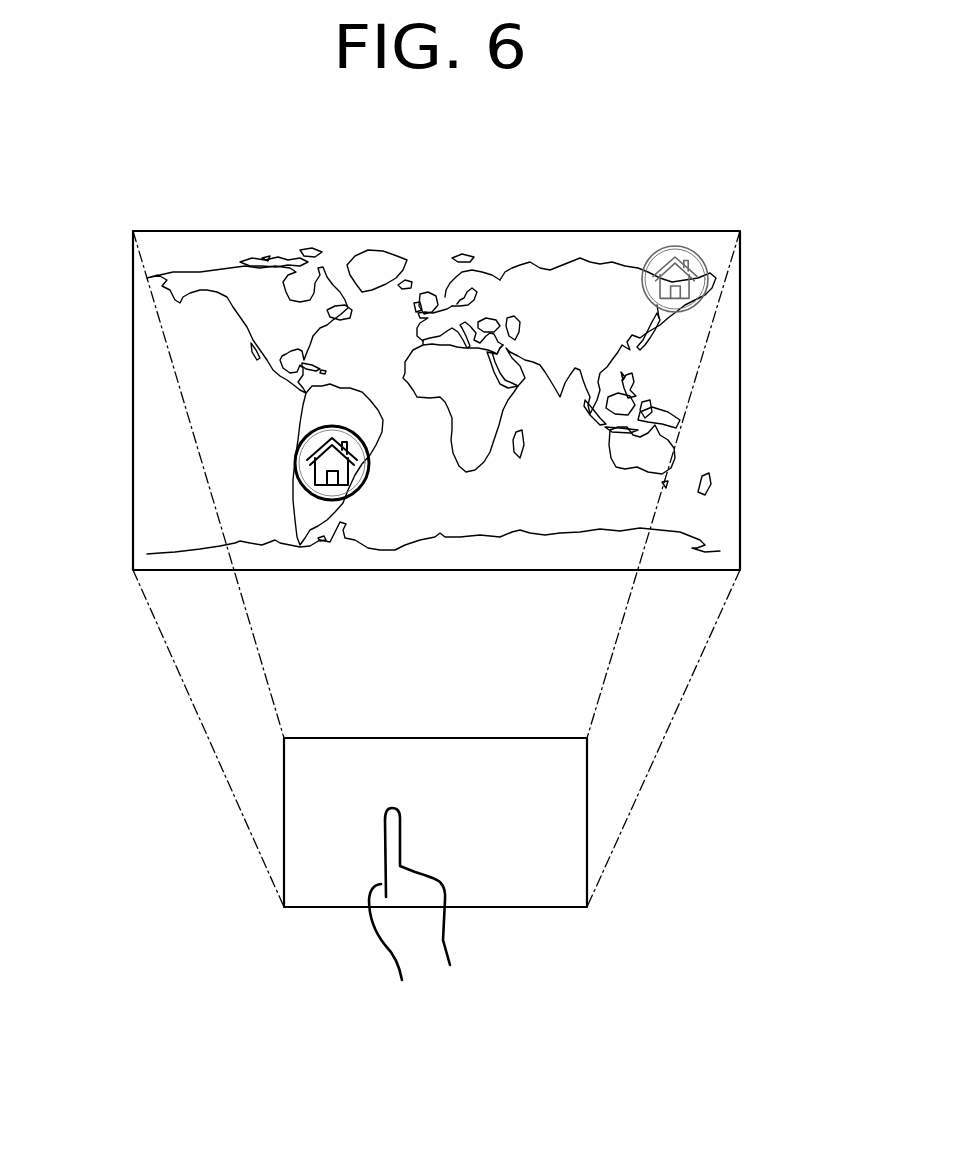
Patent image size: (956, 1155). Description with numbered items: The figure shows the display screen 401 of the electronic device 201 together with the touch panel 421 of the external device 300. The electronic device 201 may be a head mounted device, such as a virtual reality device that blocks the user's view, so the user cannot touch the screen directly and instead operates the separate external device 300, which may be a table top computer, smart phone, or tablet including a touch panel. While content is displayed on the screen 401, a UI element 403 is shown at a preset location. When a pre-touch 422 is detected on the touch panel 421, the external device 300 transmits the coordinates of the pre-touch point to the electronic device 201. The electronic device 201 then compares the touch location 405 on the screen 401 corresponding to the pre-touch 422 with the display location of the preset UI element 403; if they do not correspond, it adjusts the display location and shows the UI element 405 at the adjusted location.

The electronic device 201 is at (332, 165).
The display screen 401 is at (453, 231).
The UI element 403 is at (648, 255).
The touch location 405 is at (308, 494).
The external device 300 is at (435, 774).
The touch panel 421 is at (463, 738).
The pre-touch 422 is at (400, 812).